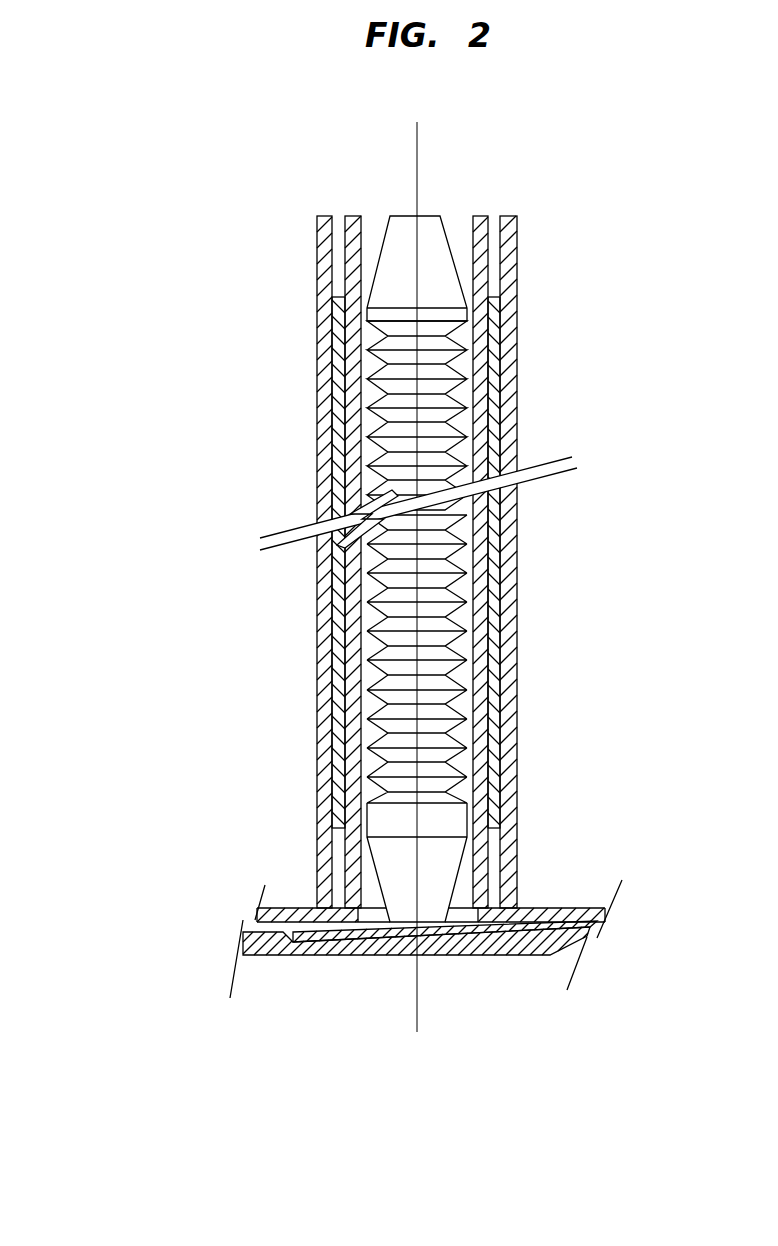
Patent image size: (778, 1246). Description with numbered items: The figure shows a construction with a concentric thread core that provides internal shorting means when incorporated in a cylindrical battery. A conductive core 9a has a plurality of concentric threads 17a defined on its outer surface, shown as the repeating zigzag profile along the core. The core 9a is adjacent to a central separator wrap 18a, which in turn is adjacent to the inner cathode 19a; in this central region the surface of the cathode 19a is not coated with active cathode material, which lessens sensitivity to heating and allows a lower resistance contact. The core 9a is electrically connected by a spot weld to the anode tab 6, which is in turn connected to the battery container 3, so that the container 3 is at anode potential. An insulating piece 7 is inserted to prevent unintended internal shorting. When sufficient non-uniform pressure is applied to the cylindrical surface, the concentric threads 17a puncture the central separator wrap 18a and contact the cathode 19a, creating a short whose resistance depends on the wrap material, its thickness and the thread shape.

The conductive core 9a is at (382, 252).
The concentric threads 17a is at (356, 693).
The central separator wrap 18a is at (325, 853).
The inner cathode 19a is at (328, 777).
The insulating piece 7 is at (548, 908).
The anode tab 6 is at (503, 942).
The container 3 is at (283, 956).